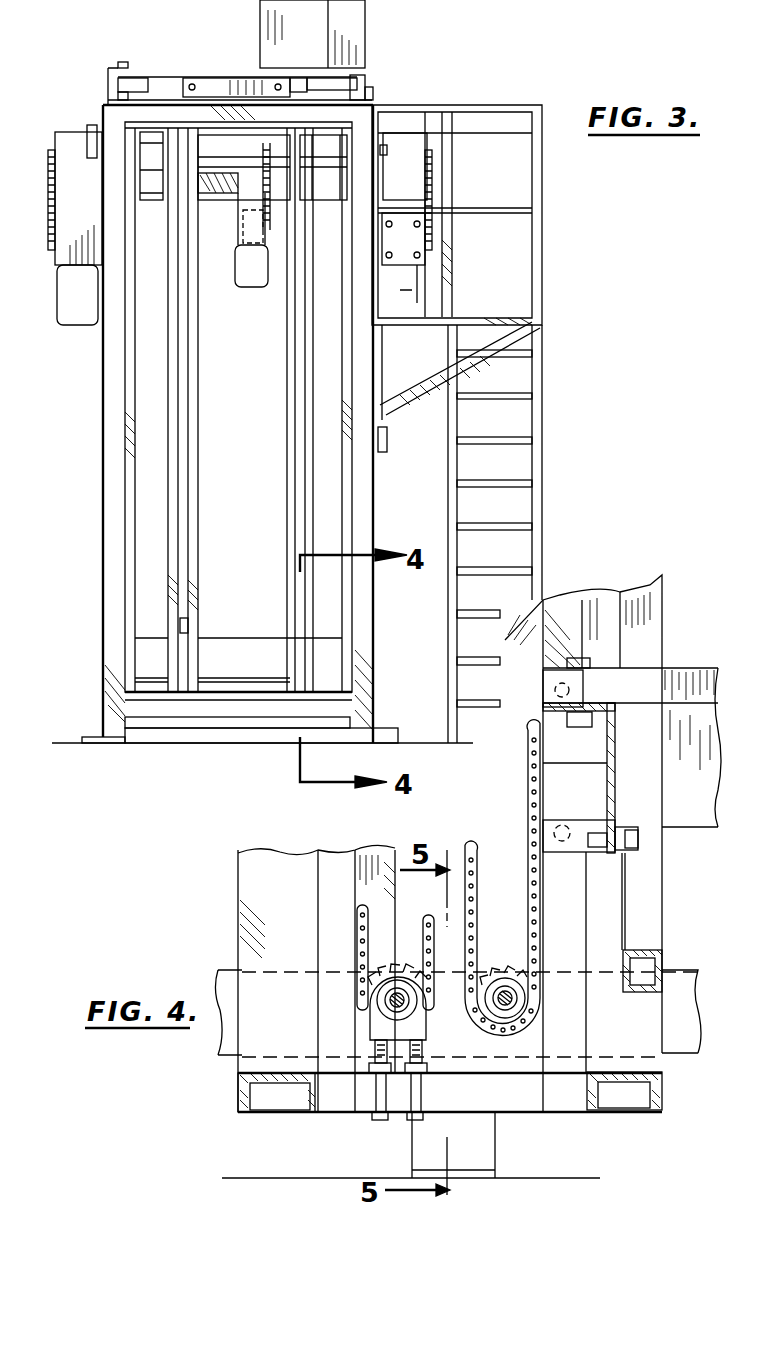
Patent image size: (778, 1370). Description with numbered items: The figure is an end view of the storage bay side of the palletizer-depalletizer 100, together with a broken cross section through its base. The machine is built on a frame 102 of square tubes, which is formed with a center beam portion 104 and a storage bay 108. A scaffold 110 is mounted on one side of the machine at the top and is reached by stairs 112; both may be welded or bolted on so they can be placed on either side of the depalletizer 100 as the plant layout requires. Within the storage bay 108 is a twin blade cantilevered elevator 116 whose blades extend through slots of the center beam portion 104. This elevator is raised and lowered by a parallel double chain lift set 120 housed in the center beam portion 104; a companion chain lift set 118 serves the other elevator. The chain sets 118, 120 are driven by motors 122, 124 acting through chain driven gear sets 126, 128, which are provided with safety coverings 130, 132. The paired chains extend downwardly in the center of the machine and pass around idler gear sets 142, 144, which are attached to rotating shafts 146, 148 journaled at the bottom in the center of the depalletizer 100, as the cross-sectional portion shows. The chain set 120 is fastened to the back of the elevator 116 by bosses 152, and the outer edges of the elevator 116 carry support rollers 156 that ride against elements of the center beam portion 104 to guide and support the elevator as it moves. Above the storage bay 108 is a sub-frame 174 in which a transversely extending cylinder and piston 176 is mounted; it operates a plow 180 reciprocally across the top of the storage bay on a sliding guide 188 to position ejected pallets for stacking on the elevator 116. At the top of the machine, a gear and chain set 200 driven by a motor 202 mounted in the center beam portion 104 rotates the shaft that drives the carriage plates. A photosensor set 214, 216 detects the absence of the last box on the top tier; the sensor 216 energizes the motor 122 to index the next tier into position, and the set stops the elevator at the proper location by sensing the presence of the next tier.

In FIG. 3, the palletizer-depalletizer 100 is at (573, 215).
In FIG. 3, the frame 102 is at (108, 442).
In FIG. 4, the frame 102 is at (222, 975).
In FIG. 3, the center beam portion 104 is at (287, 415).
In FIG. 4, the center beam portion 104 is at (285, 842).
In FIG. 3, the storage bay 108 is at (226, 536).
In FIG. 3, the scaffold 110 is at (552, 268).
In FIG. 3, the stairs 112 is at (540, 395).
In FIG. 3, the twin blade cantilevered elevator 116 is at (230, 647).
In FIG. 4, the twin blade cantilevered elevator 116 is at (630, 668).
In FIG. 4, the chain lift set 118 is at (370, 922).
In FIG. 4, the chain lift set 120 is at (530, 812).
In FIG. 3, the motor 122 is at (65, 318).
In FIG. 3, the motor 124 is at (415, 292).
In FIG. 3, the chain driven gear set 126 is at (50, 245).
In FIG. 3, the chain driven gear set 128 is at (437, 182).
In FIG. 3, the safety covering 130 is at (400, 150).
In FIG. 3, the safety covering 132 is at (67, 127).
In FIG. 4, the idler gear set 142 is at (370, 988).
In FIG. 4, the idler gear set 144 is at (507, 960).
In FIG. 3, the rotating shaft 146 is at (152, 182).
In FIG. 4, the rotating shaft 146 is at (390, 1000).
In FIG. 4, the rotating shaft 148 is at (514, 1000).
In FIG. 4, the bosses 152 is at (528, 790).
In FIG. 4, the support rollers 156 is at (583, 690).
In FIG. 3, the sub-frame 174 is at (108, 63).
In FIG. 3, the transversely extending cylinder and piston 176 is at (293, 78).
In FIG. 3, the plow 180 is at (132, 80).
In FIG. 3, the sliding guide 188 is at (163, 82).
In FIG. 3, the gear and chain set 200 is at (245, 205).
In FIG. 3, the motor 202 is at (243, 287).
In FIG. 3, the photosensor 214 is at (372, 87).
In FIG. 3, the sensor 216 is at (123, 62).